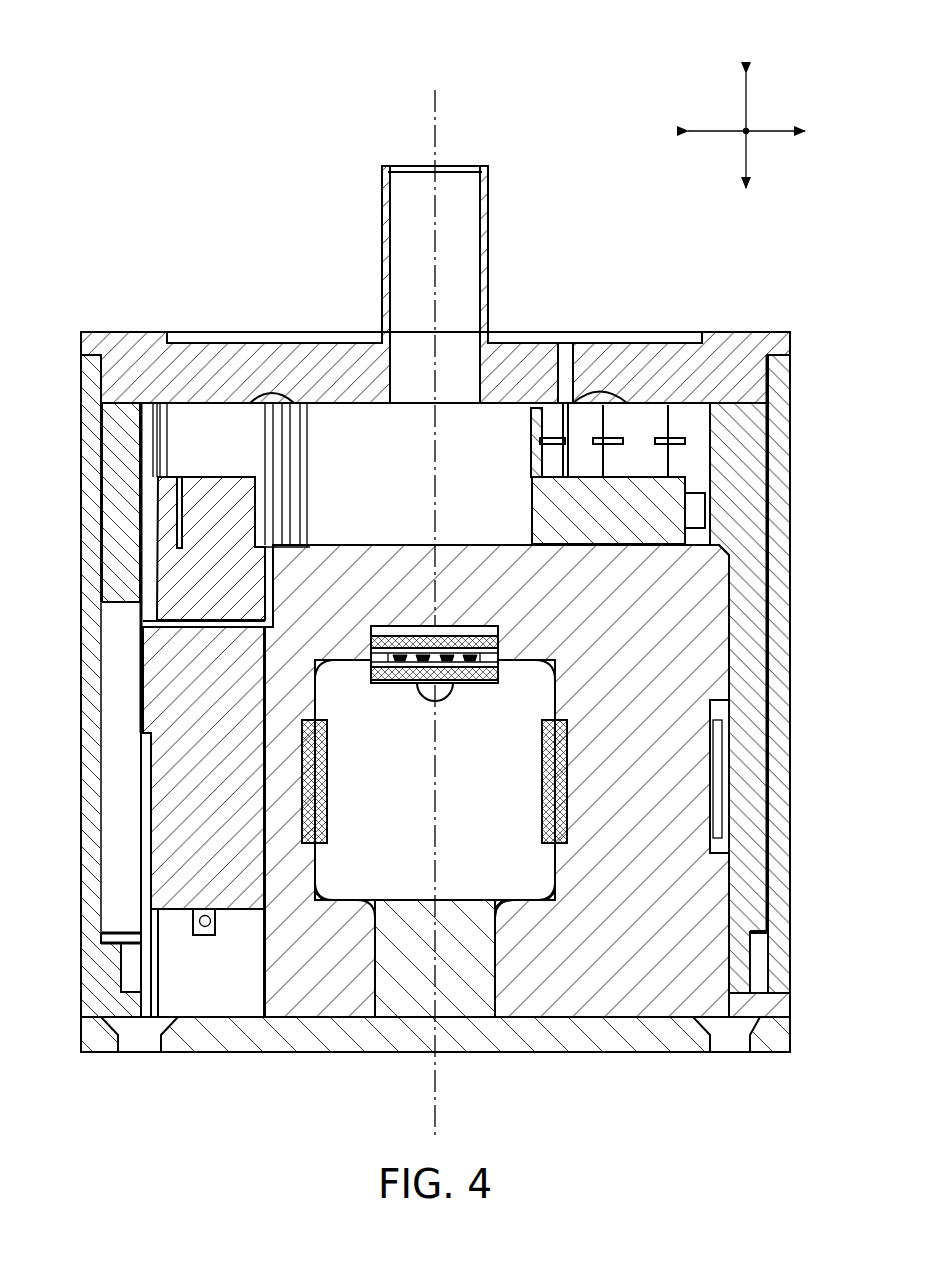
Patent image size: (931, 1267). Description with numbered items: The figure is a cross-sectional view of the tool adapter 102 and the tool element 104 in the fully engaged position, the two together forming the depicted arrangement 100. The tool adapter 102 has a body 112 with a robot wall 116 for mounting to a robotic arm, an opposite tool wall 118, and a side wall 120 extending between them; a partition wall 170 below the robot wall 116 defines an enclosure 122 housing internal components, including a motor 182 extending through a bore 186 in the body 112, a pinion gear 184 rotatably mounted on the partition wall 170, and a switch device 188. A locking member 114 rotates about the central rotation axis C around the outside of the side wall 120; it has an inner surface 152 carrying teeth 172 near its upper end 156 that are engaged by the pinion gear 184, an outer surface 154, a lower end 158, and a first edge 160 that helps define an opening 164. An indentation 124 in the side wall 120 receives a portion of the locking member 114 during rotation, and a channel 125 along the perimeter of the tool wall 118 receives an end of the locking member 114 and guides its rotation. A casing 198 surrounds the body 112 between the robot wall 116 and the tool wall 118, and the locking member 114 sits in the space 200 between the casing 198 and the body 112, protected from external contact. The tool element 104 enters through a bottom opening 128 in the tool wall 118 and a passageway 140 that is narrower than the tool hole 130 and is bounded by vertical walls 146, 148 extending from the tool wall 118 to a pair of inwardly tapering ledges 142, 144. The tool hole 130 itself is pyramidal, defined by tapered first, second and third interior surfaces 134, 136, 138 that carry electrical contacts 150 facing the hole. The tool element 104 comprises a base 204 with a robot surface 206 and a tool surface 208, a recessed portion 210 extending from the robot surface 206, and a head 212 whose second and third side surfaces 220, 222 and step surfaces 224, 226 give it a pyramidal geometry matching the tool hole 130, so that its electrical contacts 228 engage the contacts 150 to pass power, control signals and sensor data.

The sensor assembly 100 is at (85, 105).
The tool adapter 102 is at (438, 591).
The tool element 104 is at (435, 1047).
The body 112 is at (576, 1006).
The locking member 114 is at (774, 842).
The robot wall 116 is at (106, 330).
The tool wall 118 is at (301, 1005).
The side wall 120 is at (712, 700).
The enclosure 122 is at (336, 420).
The indentation 124 is at (713, 778).
The channel 125 is at (728, 970).
The bottom opening 128 is at (463, 1024).
The tool hole 130 is at (542, 875).
The first interior surface 134 is at (312, 672).
The second interior surface 136 is at (324, 660).
The third interior surface 138 is at (562, 700).
The passageway 140 is at (484, 980).
The ledge 142 is at (317, 902).
The ledge 144 is at (540, 902).
The vertical wall 146 is at (372, 963).
The vertical wall 148 is at (502, 1008).
The electrical contacts 150 is at (304, 785).
The inner surface 152 is at (775, 702).
The outer surface 154 is at (762, 630).
The upper end 156 is at (772, 420).
The lower end 158 is at (760, 985).
The first edge 160 is at (103, 790).
The opening 164 is at (122, 672).
The partition wall 170 is at (482, 545).
The teeth 172 is at (176, 396).
The motor 182 is at (150, 713).
The pinion gear 184 is at (214, 488).
The bore 186 is at (150, 853).
The switch device 188 is at (532, 546).
The casing 198 is at (788, 490).
The space 200 is at (752, 947).
The base 204 is at (166, 1058).
The robot surface 206 is at (232, 1000).
The tool surface 208 is at (212, 1053).
The recessed portion 210 is at (397, 1012).
The head 212 is at (507, 710).
The second side surface 220 is at (353, 663).
The third side surface 222 is at (318, 705).
The step surface 224 is at (507, 898).
The step surface 226 is at (353, 898).
The electrical contacts 228 is at (327, 778).
The central rotation axis C is at (437, 130).